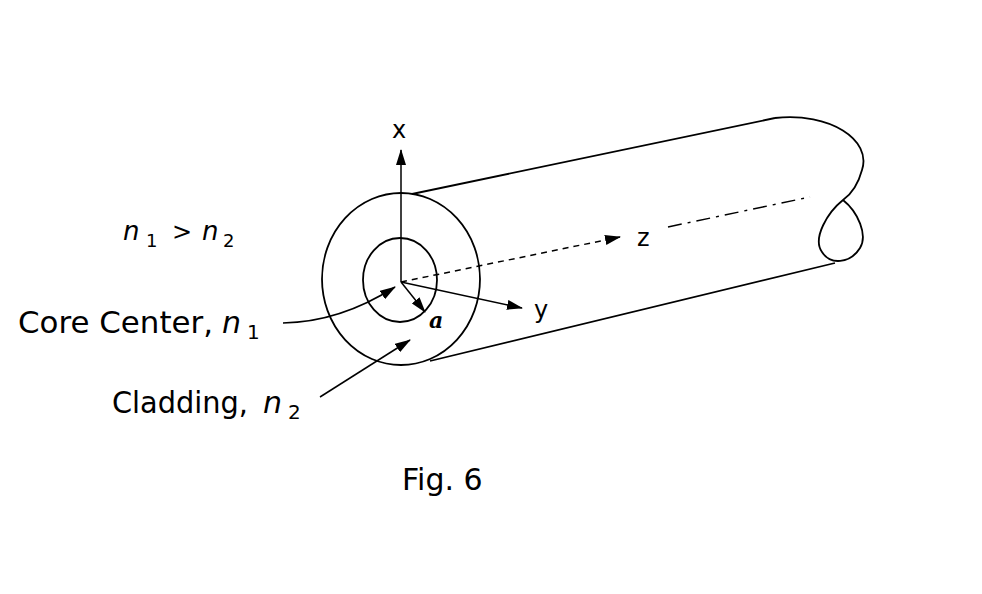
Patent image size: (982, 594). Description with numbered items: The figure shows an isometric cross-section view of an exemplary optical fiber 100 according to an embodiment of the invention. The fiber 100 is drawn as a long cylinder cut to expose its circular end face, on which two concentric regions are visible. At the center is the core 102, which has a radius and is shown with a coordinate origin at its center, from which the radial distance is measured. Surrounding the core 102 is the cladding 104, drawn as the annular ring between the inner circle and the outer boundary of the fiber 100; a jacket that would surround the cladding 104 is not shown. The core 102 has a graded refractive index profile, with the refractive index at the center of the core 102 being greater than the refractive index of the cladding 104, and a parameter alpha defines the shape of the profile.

The fiber 100 is at (520, 184).
The core 102 is at (380, 272).
The cladding 104 is at (372, 213).